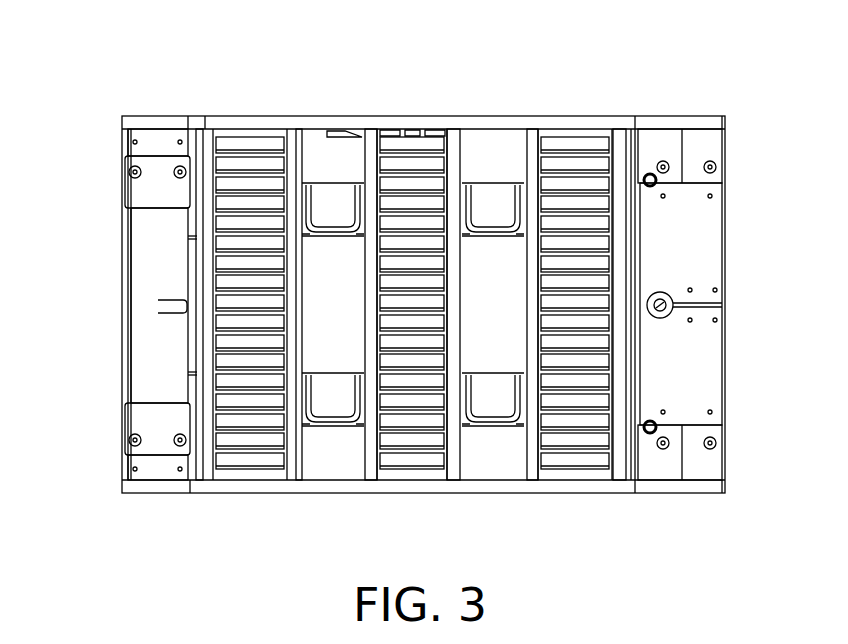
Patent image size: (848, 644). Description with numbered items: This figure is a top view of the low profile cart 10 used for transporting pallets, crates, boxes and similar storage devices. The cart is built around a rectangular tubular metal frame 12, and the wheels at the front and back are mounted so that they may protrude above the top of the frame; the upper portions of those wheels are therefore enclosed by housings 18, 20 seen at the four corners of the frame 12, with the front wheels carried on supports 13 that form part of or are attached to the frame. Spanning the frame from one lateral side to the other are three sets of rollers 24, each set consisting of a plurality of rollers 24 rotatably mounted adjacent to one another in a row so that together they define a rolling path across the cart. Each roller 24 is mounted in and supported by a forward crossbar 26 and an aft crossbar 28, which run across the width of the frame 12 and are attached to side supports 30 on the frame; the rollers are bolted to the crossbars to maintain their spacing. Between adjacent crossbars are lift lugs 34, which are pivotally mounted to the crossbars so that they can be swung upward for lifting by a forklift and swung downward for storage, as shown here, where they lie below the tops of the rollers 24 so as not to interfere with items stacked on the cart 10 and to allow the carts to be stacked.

The cart 10 is at (88, 366).
The frame 12 is at (198, 487).
The supports 13 is at (142, 272).
The housing 18 is at (708, 150).
The housing 20 is at (140, 155).
The rollers 24 is at (248, 148).
The forward crossbar 26 is at (300, 135).
The aft crossbar 28 is at (205, 140).
The side supports 30 is at (700, 117).
The lift lugs 34 is at (522, 397).